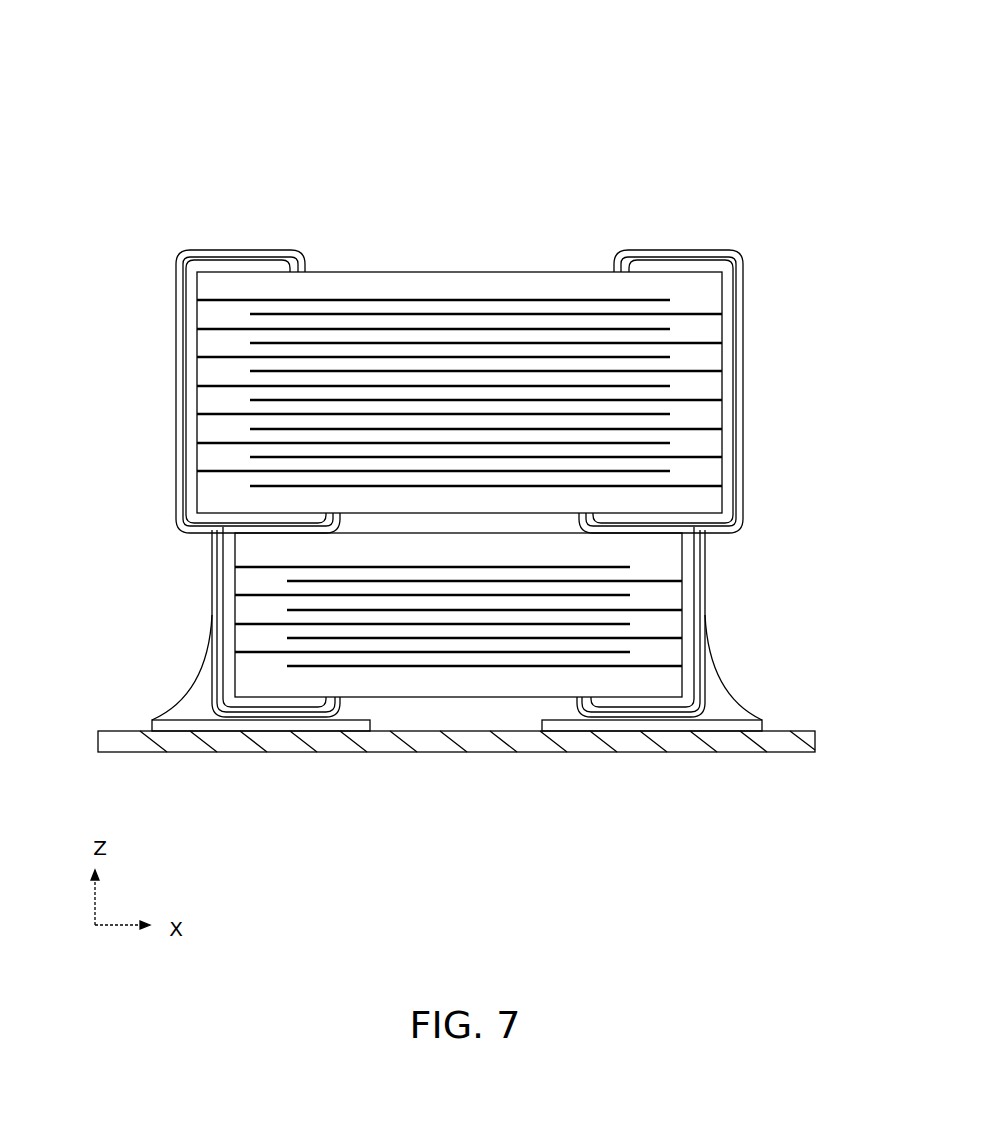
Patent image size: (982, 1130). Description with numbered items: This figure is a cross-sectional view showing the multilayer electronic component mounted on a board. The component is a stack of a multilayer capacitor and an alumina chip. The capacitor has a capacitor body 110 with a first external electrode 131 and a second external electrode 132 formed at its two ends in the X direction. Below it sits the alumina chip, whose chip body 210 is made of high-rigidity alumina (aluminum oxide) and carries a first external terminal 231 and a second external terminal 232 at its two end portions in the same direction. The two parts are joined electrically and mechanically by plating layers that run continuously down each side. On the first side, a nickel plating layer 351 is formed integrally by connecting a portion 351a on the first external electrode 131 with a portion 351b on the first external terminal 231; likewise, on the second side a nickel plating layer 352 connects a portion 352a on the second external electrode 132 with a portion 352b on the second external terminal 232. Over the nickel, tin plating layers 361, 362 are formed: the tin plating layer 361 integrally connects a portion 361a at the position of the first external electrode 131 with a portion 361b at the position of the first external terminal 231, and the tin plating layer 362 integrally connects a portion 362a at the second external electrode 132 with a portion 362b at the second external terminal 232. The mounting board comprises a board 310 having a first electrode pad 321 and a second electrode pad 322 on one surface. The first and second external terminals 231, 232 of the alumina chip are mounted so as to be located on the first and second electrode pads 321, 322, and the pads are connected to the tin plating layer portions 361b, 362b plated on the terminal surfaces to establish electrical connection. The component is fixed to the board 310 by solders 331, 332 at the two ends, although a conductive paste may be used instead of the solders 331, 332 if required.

The capacitor body 110 is at (428, 272).
The first external electrode 131 is at (247, 262).
The second external electrode 132 is at (668, 262).
The chip body 210 is at (450, 690).
The first external terminal 231 is at (272, 700).
The second external terminal 232 is at (643, 703).
The board 310 is at (372, 733).
The first electrode pad 321 is at (155, 718).
The second electrode pad 322 is at (762, 718).
The solder 331 is at (194, 708).
The solder 332 is at (724, 707).
The nickel plating layer 351 is at (76, 475).
The portion of nickel plating layer 351a is at (185, 491).
The first conductive resin layer lower portion 351b is at (214, 585).
The nickel plating layer 352 is at (838, 475).
The portion of nickel plating layer 352a is at (738, 482).
The second conductive resin layer lower portion 352b is at (703, 552).
The tin plating layer 361 is at (548, 18).
The portion of tin plating layer 361a is at (178, 287).
The portion of tin plating layer 361b is at (212, 606).
The tin plating layer 362 is at (716, 18).
The portion of tin plating layer 362a is at (745, 290).
The portion of tin plating layer 362b is at (706, 604).